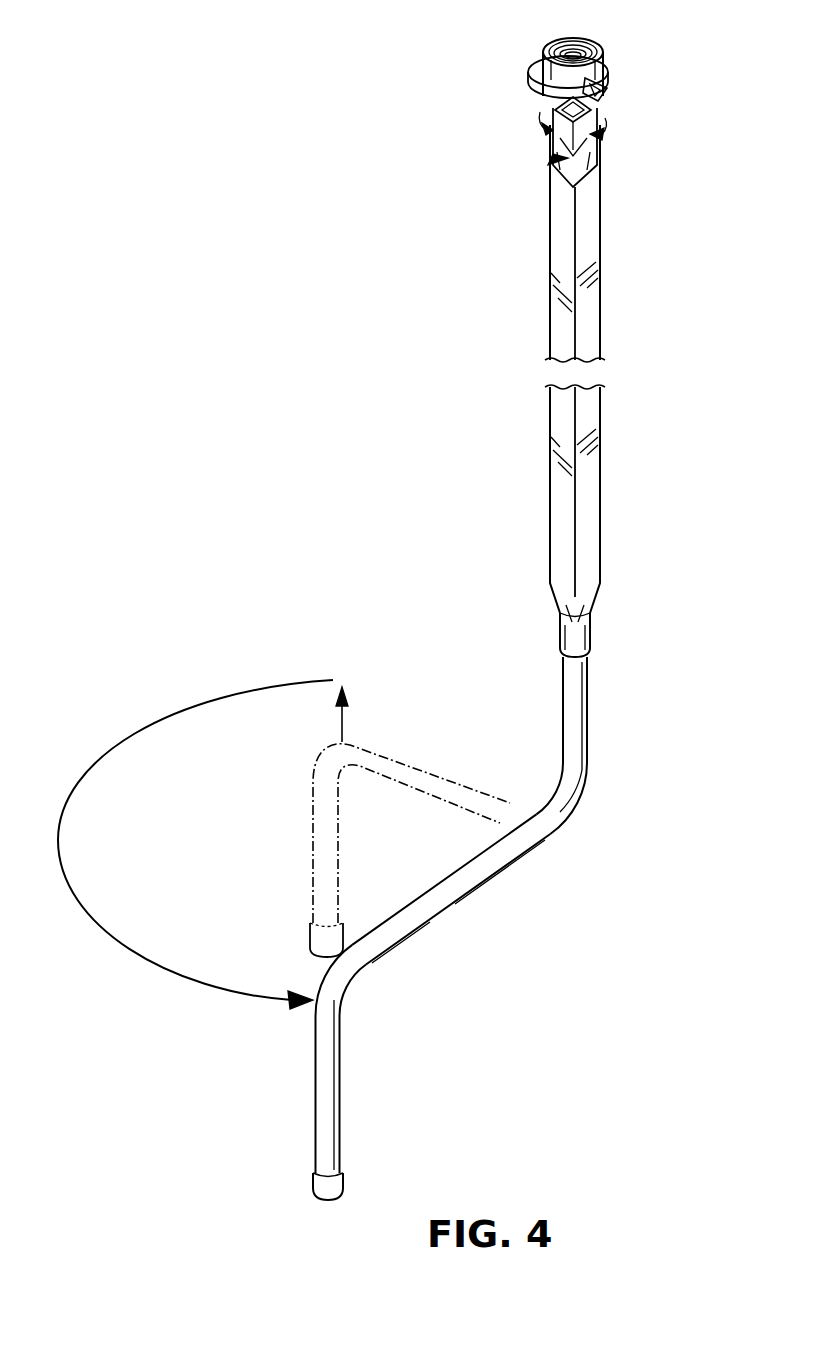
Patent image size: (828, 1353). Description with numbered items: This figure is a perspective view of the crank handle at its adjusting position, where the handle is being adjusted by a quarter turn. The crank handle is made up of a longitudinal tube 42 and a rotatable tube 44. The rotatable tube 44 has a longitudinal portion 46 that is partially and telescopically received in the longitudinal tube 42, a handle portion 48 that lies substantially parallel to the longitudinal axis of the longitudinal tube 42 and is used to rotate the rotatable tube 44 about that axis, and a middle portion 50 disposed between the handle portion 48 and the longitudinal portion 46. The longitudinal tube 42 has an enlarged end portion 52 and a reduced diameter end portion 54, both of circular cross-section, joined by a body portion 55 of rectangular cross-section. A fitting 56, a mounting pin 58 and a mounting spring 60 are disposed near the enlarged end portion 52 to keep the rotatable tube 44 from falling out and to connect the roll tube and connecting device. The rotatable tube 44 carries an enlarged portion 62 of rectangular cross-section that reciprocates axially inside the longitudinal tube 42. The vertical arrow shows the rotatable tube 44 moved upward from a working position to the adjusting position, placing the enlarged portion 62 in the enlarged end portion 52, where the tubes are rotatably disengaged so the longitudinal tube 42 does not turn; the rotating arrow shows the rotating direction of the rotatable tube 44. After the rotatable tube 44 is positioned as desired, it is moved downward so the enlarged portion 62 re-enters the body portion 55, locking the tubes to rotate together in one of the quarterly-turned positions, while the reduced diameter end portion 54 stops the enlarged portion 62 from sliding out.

The longitudinal tube 42 is at (602, 298).
The rotatable tube 44 is at (548, 163).
The longitudinal portion 46 is at (577, 710).
The handle portion 48 is at (330, 1082).
The middle portion 50 is at (423, 921).
The enlarged end portion 52 is at (600, 108).
The reduced diameter end portion 54 is at (591, 638).
The body portion 55 is at (590, 482).
The fitting 56 is at (575, 50).
The mounting pin 58 is at (608, 90).
The mounting spring 60 is at (528, 80).
The enlarged portion 62 is at (600, 135).